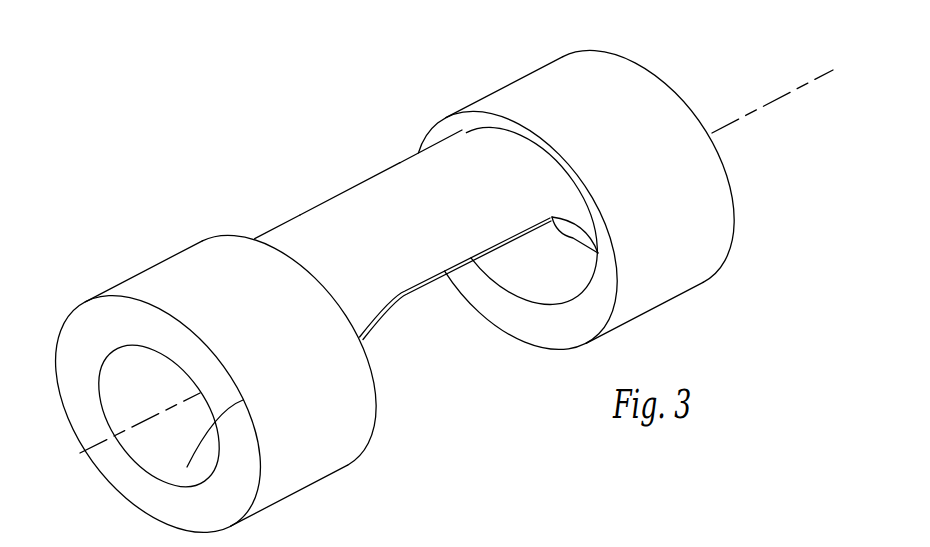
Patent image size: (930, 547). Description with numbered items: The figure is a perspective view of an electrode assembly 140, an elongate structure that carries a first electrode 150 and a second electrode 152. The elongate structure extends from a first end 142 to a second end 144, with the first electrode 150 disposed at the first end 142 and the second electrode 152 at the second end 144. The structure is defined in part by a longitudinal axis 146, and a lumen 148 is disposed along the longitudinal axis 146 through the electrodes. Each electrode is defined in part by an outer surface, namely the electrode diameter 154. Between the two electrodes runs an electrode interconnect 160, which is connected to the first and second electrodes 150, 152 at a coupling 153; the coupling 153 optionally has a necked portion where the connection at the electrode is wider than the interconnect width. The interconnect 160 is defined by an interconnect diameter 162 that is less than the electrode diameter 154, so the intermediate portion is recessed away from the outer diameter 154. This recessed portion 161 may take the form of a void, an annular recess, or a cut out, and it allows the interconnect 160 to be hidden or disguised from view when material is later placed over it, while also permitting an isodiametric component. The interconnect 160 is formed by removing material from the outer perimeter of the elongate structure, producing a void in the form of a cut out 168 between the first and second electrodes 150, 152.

The electrode assembly 140 is at (154, 94).
The first end 142 is at (667, 80).
The second end 144 is at (72, 427).
The longitudinal axis 146 is at (160, 407).
The lumen 148 is at (243, 400).
The first electrode 150 is at (585, 47).
The second electrode 152 is at (66, 322).
The coupling 153 is at (547, 183).
The electrode diameter 154 is at (307, 486).
The electrode interconnect 160 is at (287, 223).
The recessed portion 161 is at (433, 133).
The interconnect diameter 162 is at (356, 185).
The cut out 168 is at (475, 373).